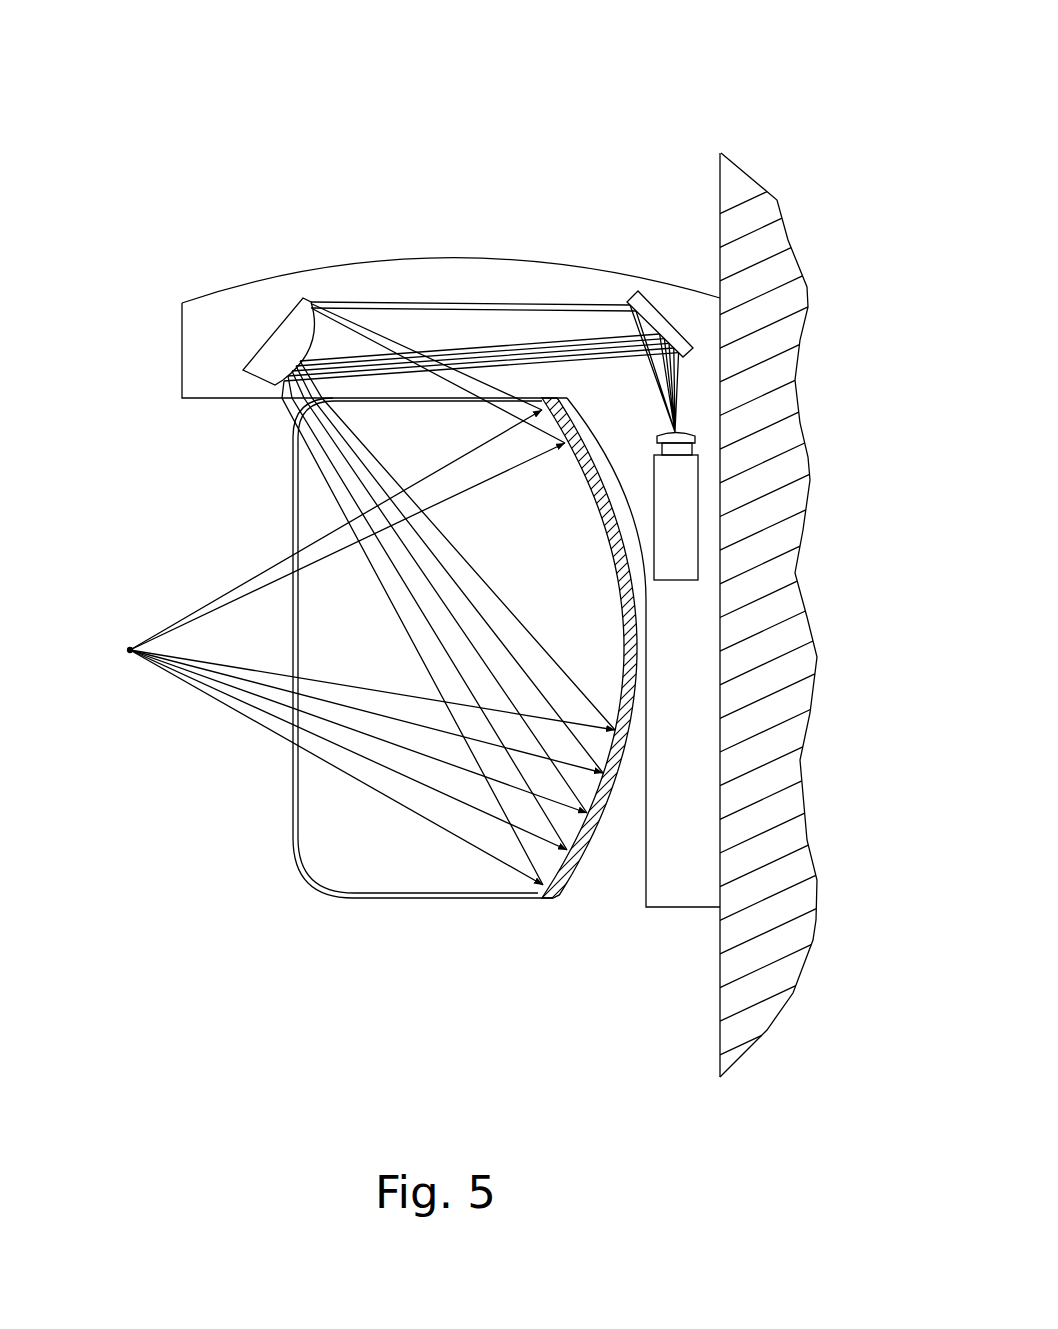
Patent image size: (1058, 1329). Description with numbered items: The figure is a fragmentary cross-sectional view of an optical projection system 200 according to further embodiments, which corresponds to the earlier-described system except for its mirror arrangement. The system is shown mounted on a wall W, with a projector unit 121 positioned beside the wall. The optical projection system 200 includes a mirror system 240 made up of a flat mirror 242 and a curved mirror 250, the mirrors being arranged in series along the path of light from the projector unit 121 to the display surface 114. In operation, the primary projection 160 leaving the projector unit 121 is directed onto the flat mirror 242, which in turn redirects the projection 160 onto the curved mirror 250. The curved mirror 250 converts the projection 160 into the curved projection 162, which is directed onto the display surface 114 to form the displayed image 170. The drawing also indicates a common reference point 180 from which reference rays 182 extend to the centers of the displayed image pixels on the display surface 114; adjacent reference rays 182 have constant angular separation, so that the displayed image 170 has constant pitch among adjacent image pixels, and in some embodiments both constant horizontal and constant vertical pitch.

The optical projection system 200 is at (589, 97).
The mirror system 240 is at (552, 248).
The primary projection 160 is at (415, 293).
The flat mirror 242 is at (655, 320).
The curved mirror 250 is at (265, 352).
The curved projection 162 is at (325, 490).
The displayed image 170 is at (600, 618).
The display surface 114 is at (605, 548).
The common reference point 180 is at (128, 648).
The reference rays 182 is at (193, 697).
The projector unit 121 is at (675, 528).
The wall W is at (773, 458).